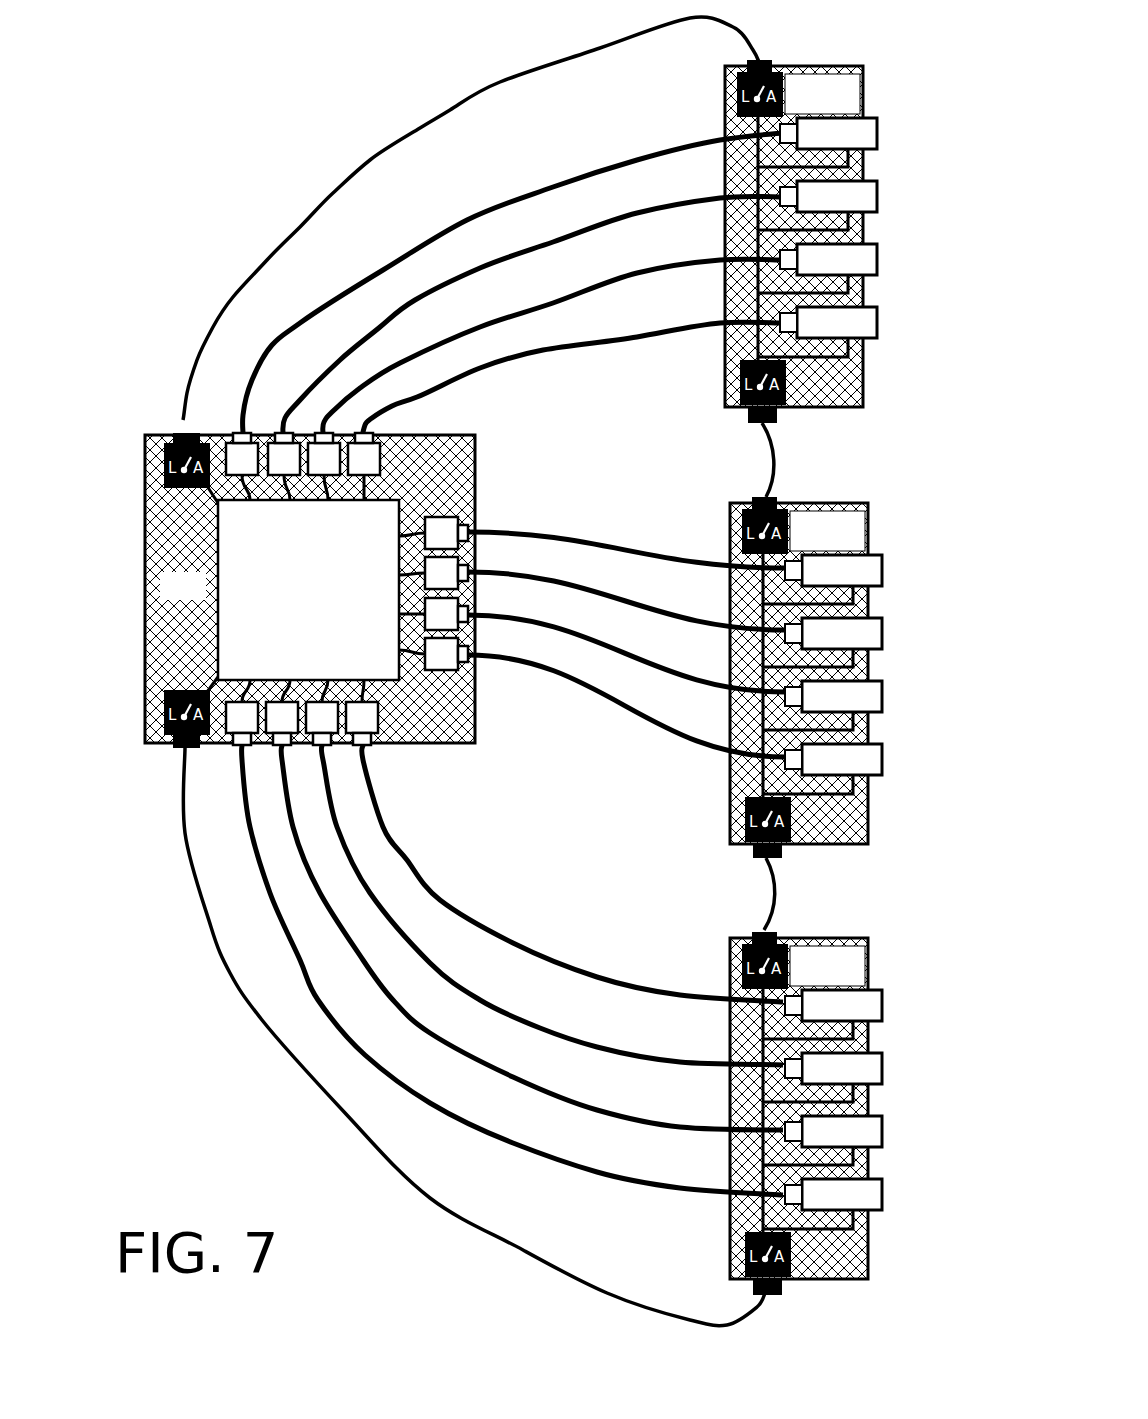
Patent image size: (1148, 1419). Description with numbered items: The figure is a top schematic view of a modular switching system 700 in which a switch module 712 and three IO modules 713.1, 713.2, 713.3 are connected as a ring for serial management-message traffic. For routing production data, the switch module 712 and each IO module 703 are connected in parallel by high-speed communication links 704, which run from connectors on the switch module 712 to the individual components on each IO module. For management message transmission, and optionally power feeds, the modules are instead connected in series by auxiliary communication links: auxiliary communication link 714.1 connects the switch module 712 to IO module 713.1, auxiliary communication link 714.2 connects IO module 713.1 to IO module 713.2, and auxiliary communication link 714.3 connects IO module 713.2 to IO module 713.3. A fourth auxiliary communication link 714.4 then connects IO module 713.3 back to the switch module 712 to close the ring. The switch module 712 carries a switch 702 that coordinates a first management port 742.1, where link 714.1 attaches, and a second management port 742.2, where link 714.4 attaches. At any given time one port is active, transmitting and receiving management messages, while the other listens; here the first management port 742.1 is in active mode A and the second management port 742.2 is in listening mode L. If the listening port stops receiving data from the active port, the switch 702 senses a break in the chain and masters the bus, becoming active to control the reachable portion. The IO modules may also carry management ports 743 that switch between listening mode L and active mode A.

The modular switching system 700 is at (183, 105).
The switch 702 is at (330, 601).
The IO module 703 is at (877, 115).
The high-speed communication link 704 is at (507, 207).
The switch module 712 is at (203, 596).
The IO module 713.1 is at (852, 107).
The IO module 713.2 is at (857, 544).
The IO module 713.3 is at (857, 979).
The auxiliary communication link 714.1 is at (258, 265).
The auxiliary communication link 714.2 is at (762, 462).
The auxiliary communication link 714.3 is at (771, 908).
The fourth auxiliary communication link 714.4 is at (285, 1069).
The first management port 742.1 is at (163, 475).
The second management port 742.2 is at (163, 708).
The management port 743 is at (790, 68).